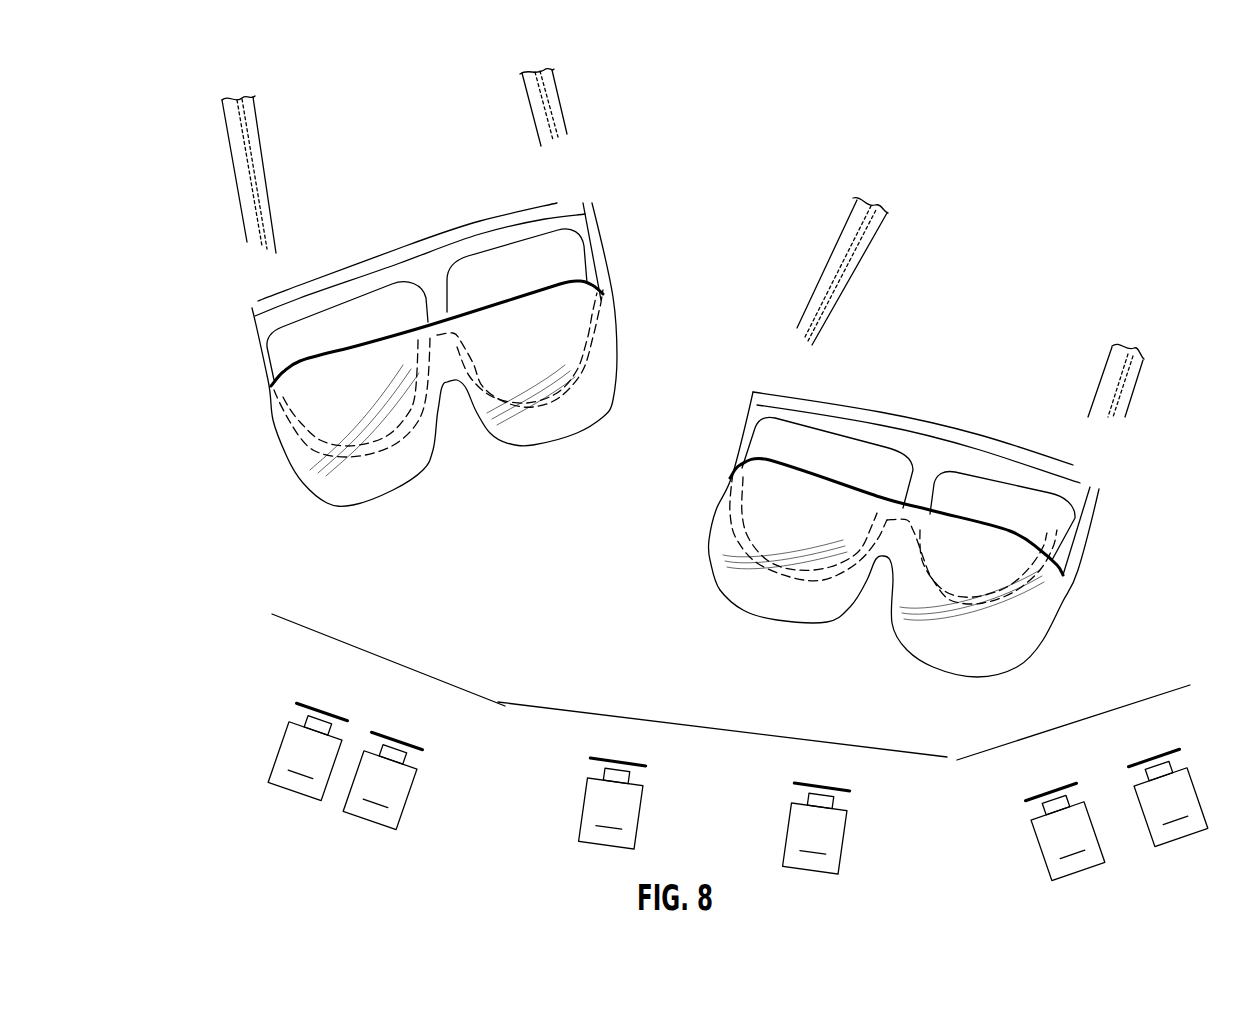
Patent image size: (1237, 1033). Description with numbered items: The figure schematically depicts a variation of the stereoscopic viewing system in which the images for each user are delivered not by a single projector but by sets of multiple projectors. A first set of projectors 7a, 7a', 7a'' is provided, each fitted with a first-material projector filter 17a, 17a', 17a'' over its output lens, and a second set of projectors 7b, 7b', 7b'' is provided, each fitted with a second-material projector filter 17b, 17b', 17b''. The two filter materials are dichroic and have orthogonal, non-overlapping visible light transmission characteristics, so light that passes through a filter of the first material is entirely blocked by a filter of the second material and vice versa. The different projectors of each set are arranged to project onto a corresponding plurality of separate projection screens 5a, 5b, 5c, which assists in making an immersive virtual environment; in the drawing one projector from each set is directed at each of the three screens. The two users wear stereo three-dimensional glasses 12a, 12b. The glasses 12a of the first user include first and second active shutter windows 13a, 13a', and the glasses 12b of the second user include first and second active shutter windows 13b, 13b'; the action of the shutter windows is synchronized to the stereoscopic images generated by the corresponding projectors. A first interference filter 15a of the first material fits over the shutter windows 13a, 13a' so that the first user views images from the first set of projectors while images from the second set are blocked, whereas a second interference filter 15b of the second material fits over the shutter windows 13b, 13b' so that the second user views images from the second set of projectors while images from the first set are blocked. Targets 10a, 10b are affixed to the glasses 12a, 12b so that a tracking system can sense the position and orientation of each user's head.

The projection screen 5a is at (387, 657).
The projection screen 5b is at (723, 730).
The projection screen 5c is at (1047, 732).
The projector 7a is at (307, 755).
The projector 7b is at (382, 784).
The projector 7a' is at (612, 807).
The projector 7b' is at (816, 832).
The projector 7a'' is at (1066, 835).
The projector 7b'' is at (1169, 801).
The target 10a is at (224, 291).
The target 10b is at (758, 374).
The glasses 12a is at (603, 210).
The glasses 12b is at (997, 300).
The active shutter window 13a is at (312, 337).
The active shutter window 13a' is at (554, 270).
The active shutter window 13b is at (796, 455).
The active shutter window 13b' is at (1037, 519).
The first interference filter 15a is at (607, 341).
The second interference filter 15b is at (993, 660).
The projector filter 17a is at (295, 697).
The projector filter 17b is at (399, 716).
The projector filter 17a' is at (595, 745).
The projector filter 17b' is at (796, 771).
The projector filter 17a'' is at (1016, 783).
The projector filter 17b'' is at (1120, 754).